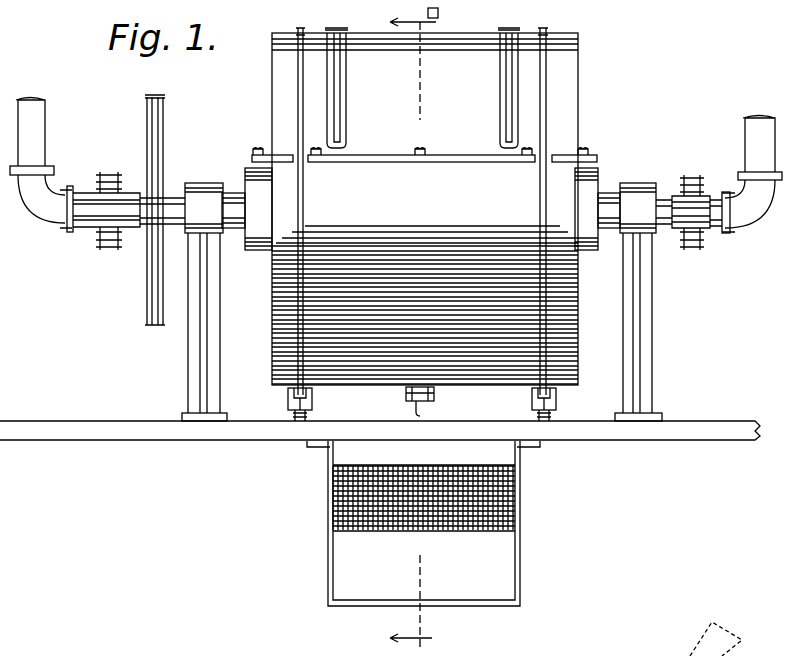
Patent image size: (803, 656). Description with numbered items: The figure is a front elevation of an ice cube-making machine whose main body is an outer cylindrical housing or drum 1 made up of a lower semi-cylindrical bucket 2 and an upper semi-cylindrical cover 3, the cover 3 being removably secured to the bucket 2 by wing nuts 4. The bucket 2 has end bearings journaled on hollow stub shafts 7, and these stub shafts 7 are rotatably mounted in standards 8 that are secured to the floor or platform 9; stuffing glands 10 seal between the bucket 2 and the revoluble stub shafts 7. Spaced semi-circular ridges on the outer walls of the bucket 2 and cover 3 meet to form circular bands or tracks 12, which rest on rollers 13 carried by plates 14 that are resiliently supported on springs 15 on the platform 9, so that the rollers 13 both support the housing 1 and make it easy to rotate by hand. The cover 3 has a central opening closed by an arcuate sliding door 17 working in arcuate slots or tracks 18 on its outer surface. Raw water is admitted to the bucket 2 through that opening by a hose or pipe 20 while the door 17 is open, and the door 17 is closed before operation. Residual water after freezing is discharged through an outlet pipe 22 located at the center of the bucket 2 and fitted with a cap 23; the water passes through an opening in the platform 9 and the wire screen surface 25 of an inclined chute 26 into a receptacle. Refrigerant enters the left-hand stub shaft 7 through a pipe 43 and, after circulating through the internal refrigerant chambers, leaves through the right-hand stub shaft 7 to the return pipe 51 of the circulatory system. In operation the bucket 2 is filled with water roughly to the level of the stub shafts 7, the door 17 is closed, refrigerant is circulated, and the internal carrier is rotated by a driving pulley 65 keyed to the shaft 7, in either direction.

The cylindrical housing 1 is at (595, 81).
The semi-cylindrical bucket 2 is at (562, 323).
The semi-cylindrical cover 3 is at (586, 24).
The wing nuts 4 is at (316, 150).
The hollow stub shafts 7 is at (236, 200).
The standards 8 is at (190, 350).
The platform 9 is at (72, 428).
The stuffing glands 10 is at (258, 250).
The circular tracks 12 is at (305, 212).
The rollers 13 is at (290, 392).
The plates 14 is at (312, 402).
The springs 15 is at (300, 412).
The arcuate sliding door 17 is at (476, 36).
The arcuate tracks 18 is at (347, 92).
The pipe 20 is at (440, 14).
The outlet pipe 22 is at (405, 394).
The cap 23 is at (422, 398).
The wire screen surface 25 is at (340, 495).
The inclined chute 26 is at (345, 568).
The refrigerant inlet pipe 43 is at (42, 126).
The return pipe 51 is at (752, 124).
The driving pulley 65 is at (165, 102).